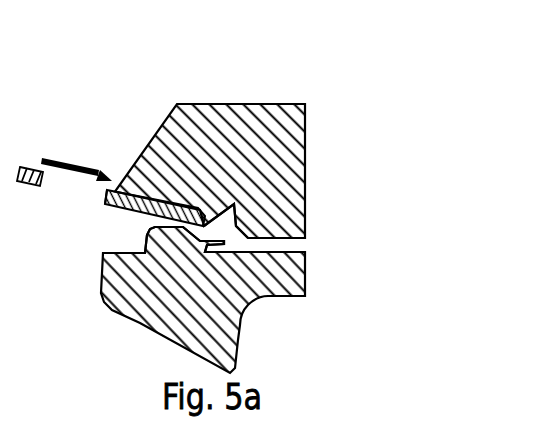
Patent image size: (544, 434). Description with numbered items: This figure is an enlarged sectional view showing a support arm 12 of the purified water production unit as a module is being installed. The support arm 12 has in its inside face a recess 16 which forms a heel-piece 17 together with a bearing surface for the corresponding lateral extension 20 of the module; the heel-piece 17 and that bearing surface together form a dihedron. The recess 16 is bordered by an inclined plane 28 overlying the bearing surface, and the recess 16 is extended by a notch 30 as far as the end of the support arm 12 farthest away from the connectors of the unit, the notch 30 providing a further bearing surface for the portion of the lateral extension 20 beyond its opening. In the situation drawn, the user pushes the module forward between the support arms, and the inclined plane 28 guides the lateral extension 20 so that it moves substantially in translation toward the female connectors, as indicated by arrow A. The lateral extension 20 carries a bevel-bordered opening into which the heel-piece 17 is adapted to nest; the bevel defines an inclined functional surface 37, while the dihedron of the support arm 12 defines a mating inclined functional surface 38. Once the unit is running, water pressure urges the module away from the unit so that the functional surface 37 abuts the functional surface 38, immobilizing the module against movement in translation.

The support arm 12 is at (197, 113).
The lateral extension 20 is at (117, 188).
The inclined plane 28 is at (225, 222).
The inclined functional surface 37 is at (93, 192).
The arrow A is at (63, 165).
The inclined functional surface 38 is at (199, 295).
The heel-piece 17 is at (128, 238).
The recess 16 is at (222, 248).
The notch 30 is at (119, 218).